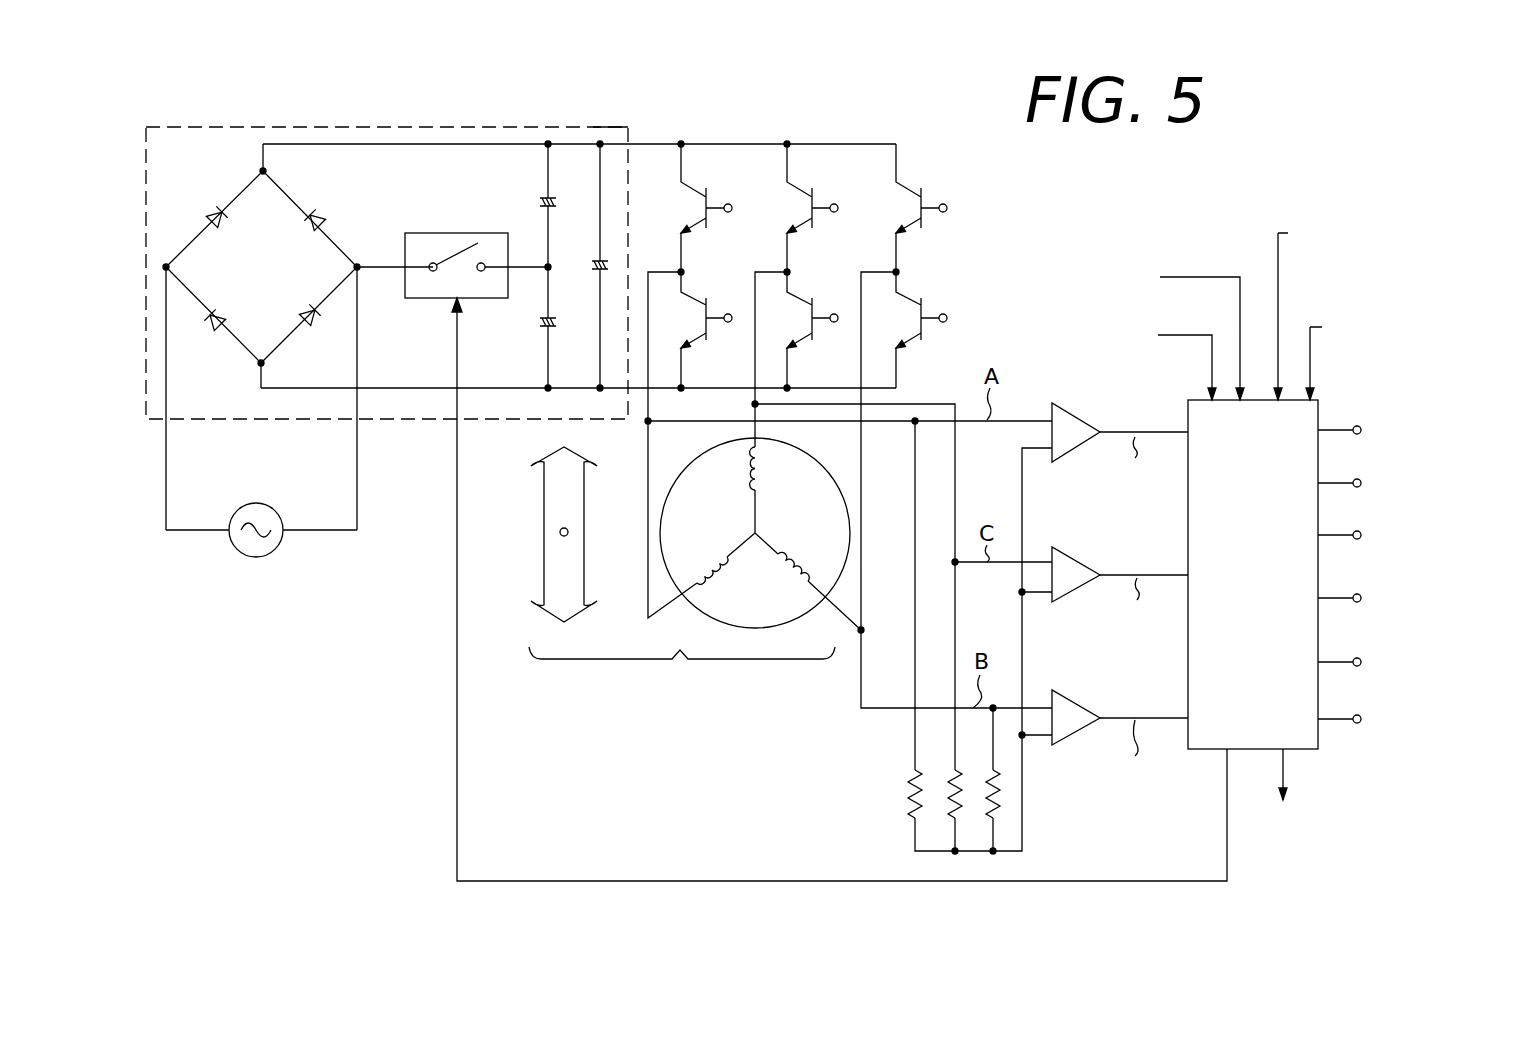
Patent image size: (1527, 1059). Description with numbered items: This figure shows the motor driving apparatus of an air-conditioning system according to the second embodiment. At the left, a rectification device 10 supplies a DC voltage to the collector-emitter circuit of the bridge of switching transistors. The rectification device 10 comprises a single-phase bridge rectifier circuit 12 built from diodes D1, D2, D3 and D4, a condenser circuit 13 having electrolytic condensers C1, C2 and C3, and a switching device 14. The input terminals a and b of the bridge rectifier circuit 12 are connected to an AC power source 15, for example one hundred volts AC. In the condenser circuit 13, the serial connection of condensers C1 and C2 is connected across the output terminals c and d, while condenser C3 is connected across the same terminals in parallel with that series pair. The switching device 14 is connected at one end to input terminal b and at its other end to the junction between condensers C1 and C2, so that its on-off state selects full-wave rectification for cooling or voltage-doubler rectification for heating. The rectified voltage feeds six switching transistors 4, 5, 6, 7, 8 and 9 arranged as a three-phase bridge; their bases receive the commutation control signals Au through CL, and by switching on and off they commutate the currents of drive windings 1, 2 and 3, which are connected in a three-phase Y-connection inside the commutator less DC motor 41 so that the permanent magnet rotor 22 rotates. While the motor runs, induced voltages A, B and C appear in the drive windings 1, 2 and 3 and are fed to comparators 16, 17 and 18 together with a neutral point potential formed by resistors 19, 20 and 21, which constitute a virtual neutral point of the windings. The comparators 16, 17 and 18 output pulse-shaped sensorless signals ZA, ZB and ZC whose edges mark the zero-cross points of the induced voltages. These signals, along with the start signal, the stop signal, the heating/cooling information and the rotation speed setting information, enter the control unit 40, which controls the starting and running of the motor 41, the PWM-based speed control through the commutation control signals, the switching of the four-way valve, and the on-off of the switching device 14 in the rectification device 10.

The rectification device 10 is at (408, 423).
The single-phase bridge rectifier circuit 12 is at (230, 187).
The diode D1 is at (226, 220).
The diode D2 is at (222, 316).
The diode D3 is at (320, 210).
The diode D4 is at (318, 320).
The condenser circuit 13 is at (588, 138).
The switching device 14 is at (468, 233).
The AC power source 15 is at (256, 557).
The electrolytic condenser C1 is at (538, 200).
The electrolytic condenser C2 is at (535, 323).
The electrolytic condenser C3 is at (592, 265).
The switching transistor 4 is at (695, 207).
The switching transistor 5 is at (695, 317).
The switching transistor 6 is at (908, 182).
The switching transistor 7 is at (908, 292).
The switching transistor 8 is at (802, 208).
The switching transistor 9 is at (806, 320).
The drive winding 1 is at (727, 567).
The drive winding 2 is at (805, 568).
The drive winding 3 is at (747, 473).
The commutator less DC motor 41 is at (689, 574).
The permanent magnet rotor 22 is at (535, 536).
The comparator 16 is at (1078, 418).
The comparator 17 is at (1072, 691).
The comparator 18 is at (1072, 550).
The resistor 19 is at (907, 792).
The resistor 20 is at (1003, 792).
The resistor 21 is at (947, 782).
The control unit 40 is at (1302, 752).